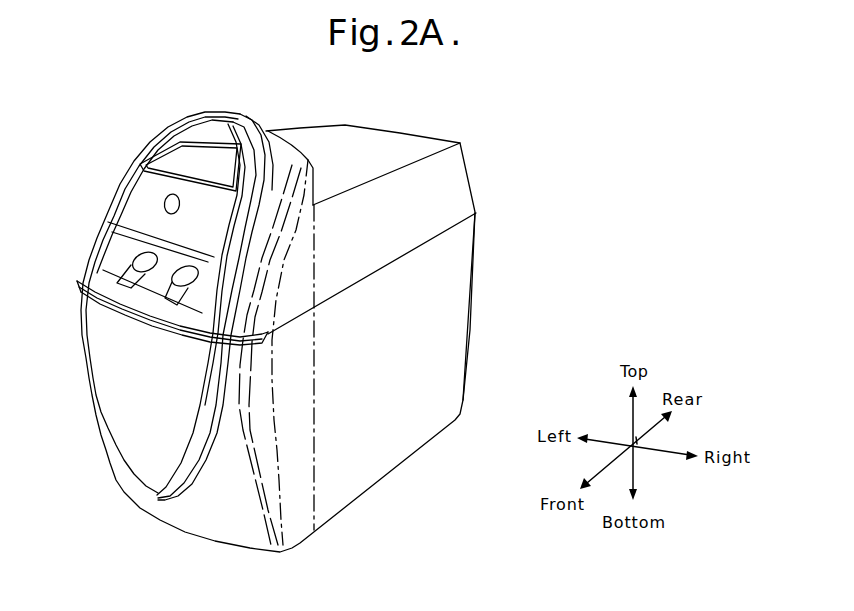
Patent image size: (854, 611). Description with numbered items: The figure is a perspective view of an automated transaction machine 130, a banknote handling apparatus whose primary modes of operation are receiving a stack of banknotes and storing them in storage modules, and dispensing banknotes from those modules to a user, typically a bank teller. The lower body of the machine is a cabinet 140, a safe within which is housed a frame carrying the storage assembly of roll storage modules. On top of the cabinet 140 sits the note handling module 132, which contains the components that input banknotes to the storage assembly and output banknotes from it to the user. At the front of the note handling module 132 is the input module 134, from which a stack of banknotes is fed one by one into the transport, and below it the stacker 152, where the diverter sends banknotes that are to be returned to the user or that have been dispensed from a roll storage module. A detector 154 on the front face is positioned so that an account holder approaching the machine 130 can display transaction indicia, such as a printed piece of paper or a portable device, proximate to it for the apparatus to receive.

The automated transaction machine 130 is at (566, 181).
The note handling module 132 is at (463, 116).
The input module 134 is at (163, 160).
The cabinet 140 is at (480, 211).
The stacker 152 is at (123, 254).
The detector 154 is at (165, 203).